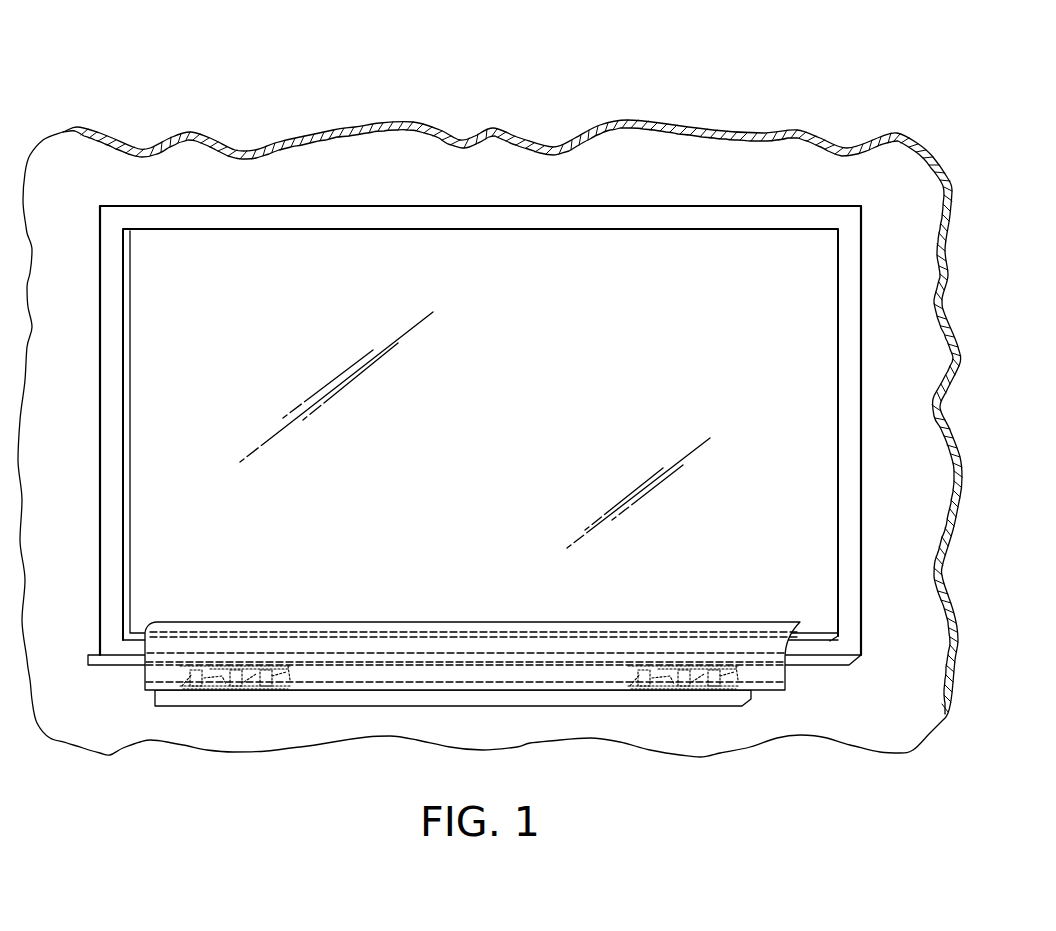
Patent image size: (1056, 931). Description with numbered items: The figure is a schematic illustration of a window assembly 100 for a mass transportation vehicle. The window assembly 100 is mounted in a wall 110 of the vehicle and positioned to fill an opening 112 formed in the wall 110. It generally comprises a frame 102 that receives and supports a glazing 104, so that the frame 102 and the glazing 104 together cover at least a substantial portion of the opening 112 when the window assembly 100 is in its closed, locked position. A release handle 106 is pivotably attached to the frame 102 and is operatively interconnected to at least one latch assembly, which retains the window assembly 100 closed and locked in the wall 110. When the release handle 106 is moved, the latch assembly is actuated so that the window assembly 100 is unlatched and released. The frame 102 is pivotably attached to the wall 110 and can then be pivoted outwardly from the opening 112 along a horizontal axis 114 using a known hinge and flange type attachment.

The window assembly 100 is at (808, 90).
The frame 102 is at (117, 218).
The glazing 104 is at (152, 302).
The release handle 106 is at (150, 678).
The wall 110 is at (914, 297).
The opening 112 is at (802, 468).
The horizontal axis 114 is at (458, 206).